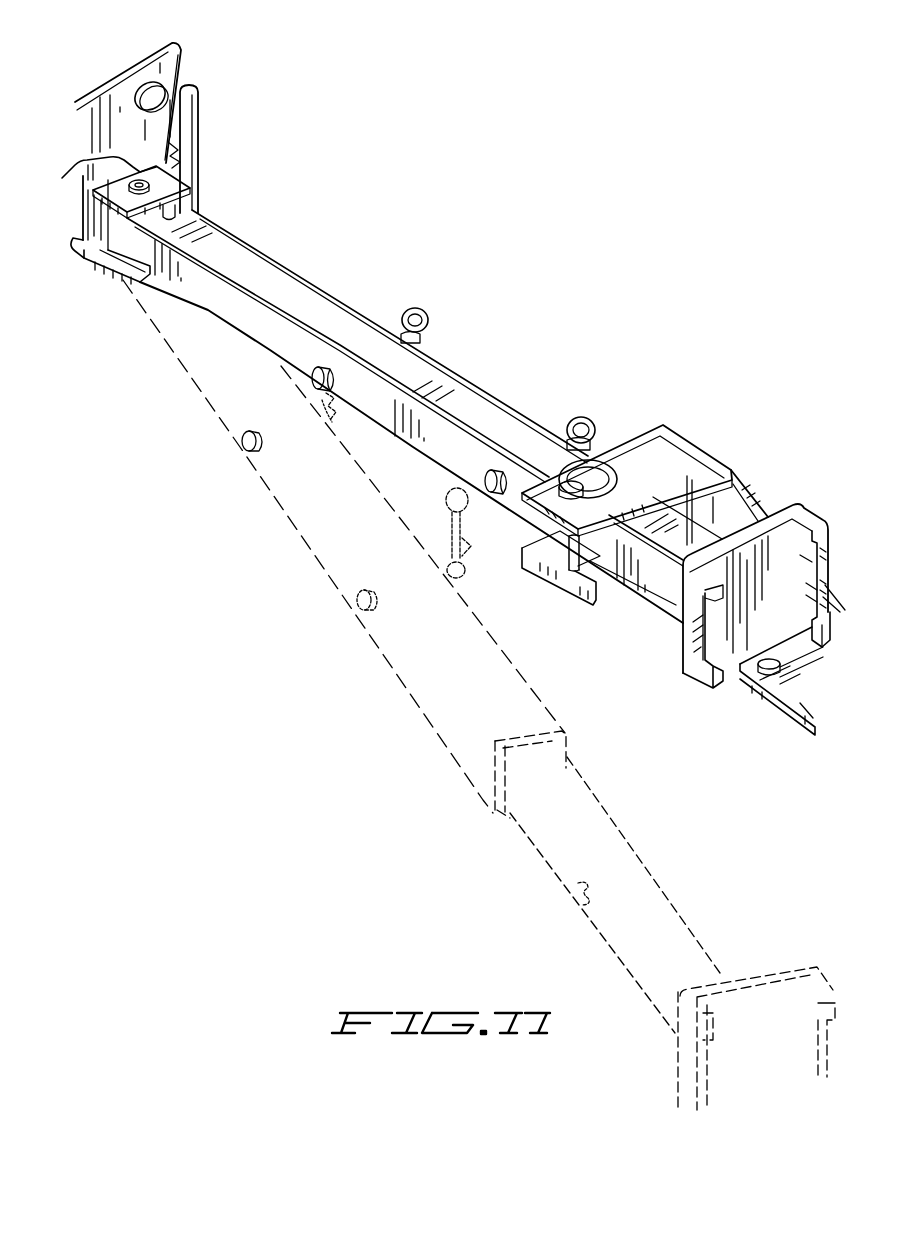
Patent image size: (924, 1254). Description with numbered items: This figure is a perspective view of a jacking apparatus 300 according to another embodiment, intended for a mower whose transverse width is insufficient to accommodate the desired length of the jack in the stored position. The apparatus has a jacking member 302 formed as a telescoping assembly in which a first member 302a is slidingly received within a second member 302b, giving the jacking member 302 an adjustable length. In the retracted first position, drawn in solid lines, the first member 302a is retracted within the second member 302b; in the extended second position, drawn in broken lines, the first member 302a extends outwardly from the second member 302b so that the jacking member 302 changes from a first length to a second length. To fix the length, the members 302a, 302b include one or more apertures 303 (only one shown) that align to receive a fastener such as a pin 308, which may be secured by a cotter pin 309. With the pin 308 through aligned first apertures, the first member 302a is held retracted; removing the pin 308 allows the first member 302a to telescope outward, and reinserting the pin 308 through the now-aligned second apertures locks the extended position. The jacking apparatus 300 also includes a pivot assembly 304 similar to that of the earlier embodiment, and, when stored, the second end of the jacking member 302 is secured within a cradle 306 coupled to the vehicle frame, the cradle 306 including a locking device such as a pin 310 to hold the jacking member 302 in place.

The jacking apparatus 300 is at (477, 158).
The jacking member 302 is at (455, 340).
The first member 302a is at (535, 845).
The second member 302b is at (500, 392).
The aperture 303 is at (574, 894).
The pivot assembly 304 is at (203, 118).
The cradle 306 is at (663, 423).
The pin 308 is at (405, 330).
The cotter pin 309 is at (420, 308).
The pin 310 is at (572, 572).